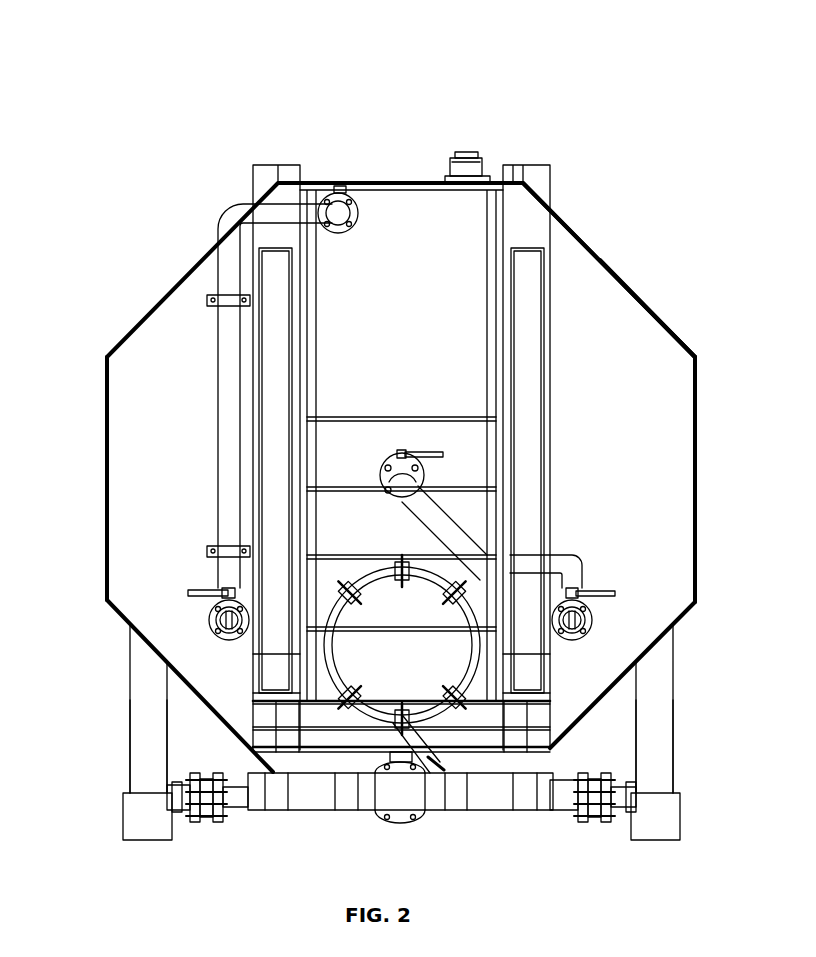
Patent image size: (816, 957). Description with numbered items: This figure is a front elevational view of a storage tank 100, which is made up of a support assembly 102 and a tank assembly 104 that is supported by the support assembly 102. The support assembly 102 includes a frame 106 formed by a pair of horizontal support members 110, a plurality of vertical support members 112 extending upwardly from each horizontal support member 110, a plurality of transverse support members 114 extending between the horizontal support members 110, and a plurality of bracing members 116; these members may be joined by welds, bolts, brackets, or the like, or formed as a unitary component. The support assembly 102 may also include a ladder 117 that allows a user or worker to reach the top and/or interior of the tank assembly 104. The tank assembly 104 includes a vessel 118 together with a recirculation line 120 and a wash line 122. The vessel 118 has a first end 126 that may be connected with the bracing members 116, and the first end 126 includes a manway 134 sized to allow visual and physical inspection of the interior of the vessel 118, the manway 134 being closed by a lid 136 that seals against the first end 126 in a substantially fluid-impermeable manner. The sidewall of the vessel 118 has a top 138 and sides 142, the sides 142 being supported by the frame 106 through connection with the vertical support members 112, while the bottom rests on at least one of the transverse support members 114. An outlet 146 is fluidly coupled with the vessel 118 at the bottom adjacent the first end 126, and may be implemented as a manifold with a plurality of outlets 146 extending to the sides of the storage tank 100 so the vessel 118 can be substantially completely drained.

The storage tank 100 is at (645, 62).
The support assembly 102 is at (128, 655).
The tank assembly 104 is at (105, 499).
The frame 106 is at (672, 655).
The horizontal support members 110 is at (123, 818).
The vertical support members 112 is at (128, 722).
The transverse support members 114 is at (233, 773).
The bracing members 116 is at (263, 378).
The ladder 117 is at (404, 413).
The vessel 118 is at (612, 268).
The recirculation line 120 is at (232, 221).
The wash line 122 is at (581, 569).
The first end 126 is at (668, 346).
The manway 134 is at (420, 663).
The lid 136 is at (388, 585).
The top 138 is at (407, 182).
The sides 142 is at (104, 425).
The outlet 146 is at (180, 814).